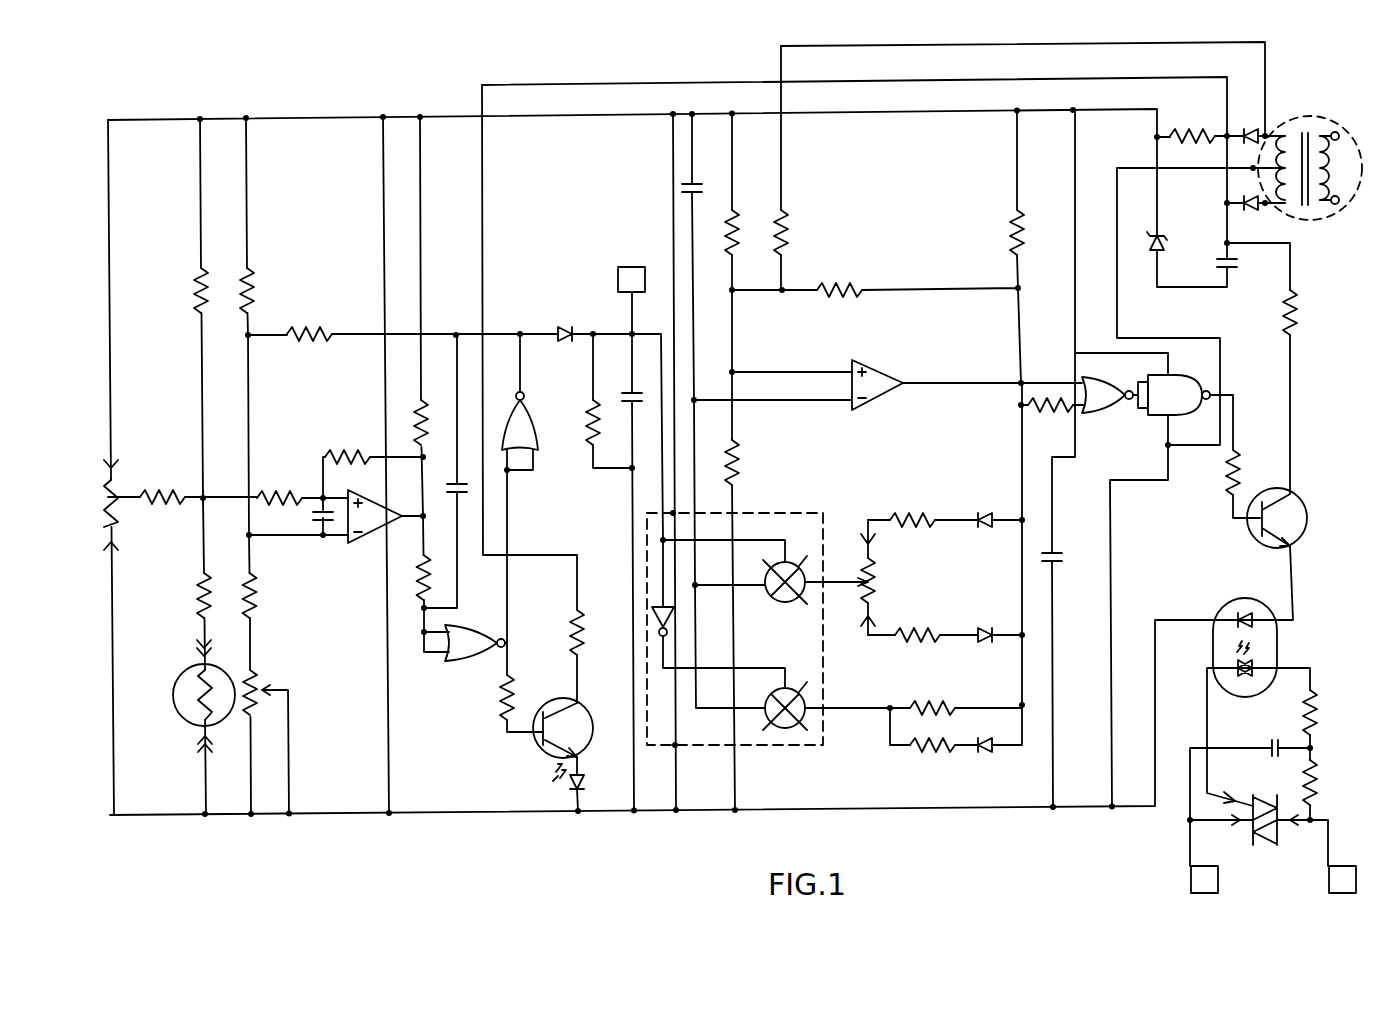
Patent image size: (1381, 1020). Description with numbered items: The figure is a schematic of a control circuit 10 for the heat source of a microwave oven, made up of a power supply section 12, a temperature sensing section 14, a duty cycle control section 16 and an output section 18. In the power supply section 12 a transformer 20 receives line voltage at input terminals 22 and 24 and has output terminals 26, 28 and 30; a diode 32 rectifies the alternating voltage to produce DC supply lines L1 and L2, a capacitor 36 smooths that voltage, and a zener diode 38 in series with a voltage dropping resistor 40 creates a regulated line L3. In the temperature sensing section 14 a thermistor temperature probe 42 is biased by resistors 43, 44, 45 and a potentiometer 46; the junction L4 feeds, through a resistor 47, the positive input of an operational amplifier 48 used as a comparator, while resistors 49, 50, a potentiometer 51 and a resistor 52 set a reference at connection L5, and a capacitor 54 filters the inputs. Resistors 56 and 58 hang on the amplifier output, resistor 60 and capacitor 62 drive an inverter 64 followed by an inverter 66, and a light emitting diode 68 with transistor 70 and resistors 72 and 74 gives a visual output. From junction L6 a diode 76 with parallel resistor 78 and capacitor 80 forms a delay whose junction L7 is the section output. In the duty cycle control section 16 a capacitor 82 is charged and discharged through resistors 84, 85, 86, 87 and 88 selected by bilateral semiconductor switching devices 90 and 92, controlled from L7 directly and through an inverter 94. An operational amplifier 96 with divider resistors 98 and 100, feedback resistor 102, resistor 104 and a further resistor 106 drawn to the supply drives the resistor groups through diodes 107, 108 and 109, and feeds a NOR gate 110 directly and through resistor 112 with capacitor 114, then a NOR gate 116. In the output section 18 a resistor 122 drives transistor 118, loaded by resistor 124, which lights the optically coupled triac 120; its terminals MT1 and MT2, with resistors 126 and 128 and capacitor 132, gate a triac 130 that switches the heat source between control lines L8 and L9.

The control circuit 10 is at (478, 861).
The power supply section 12 is at (1198, 212).
The temperature sensing section 14 is at (307, 407).
The duty cycle control section 16 is at (887, 464).
The output section 18 is at (1190, 560).
The transformer 20 is at (1310, 168).
The input terminal 22 is at (1337, 132).
The input terminal 24 is at (1337, 205).
The output terminal 26 is at (1268, 130).
The output terminal 28 is at (1254, 166).
The output terminal 30 is at (1268, 208).
The diode 32 is at (1254, 128).
The capacitor 36 is at (1216, 265).
The zener diode 38 is at (1168, 240).
The voltage dropping resistor 40 is at (1200, 144).
The thermistor temperature probe 42 is at (190, 688).
The resistor 43 is at (200, 592).
The resistor 44 is at (196, 291).
The resistor 45 is at (162, 488).
The potentiometer 46 is at (108, 497).
The resistor 47 is at (279, 488).
The operational amplifier 48 is at (365, 545).
The resistor 49 is at (250, 297).
The resistor 50 is at (256, 600).
The potentiometer 51 is at (258, 678).
The resistor 52 is at (305, 334).
The capacitor 54 is at (316, 514).
The resistor 56 is at (348, 456).
The resistor 58 is at (418, 413).
The resistor 60 is at (420, 573).
The capacitor 62 is at (452, 486).
The inverter 64 is at (476, 664).
The inverter 66 is at (527, 406).
The light emitting diode 68 is at (587, 781).
The transistor 70 is at (591, 720).
The resistor 72 is at (514, 692).
The resistor 74 is at (584, 634).
The diode 76 is at (560, 328).
The resistor 78 is at (588, 422).
The capacitor 80 is at (626, 394).
The capacitor 82 is at (682, 188).
The resistor 84 is at (908, 528).
The resistor 85 is at (917, 626).
The resistor 86 is at (942, 700).
The resistor 87 is at (940, 753).
The resistor 88 is at (873, 580).
The bilateral semiconductor switching device 90 is at (785, 602).
The bilateral semiconductor switching device 92 is at (786, 728).
The inverter 94 is at (690, 600).
The operational amplifier 96 is at (900, 366).
The resistor 98 is at (738, 228).
The resistor 100 is at (740, 452).
The resistor 102 is at (834, 286).
The resistor 104 is at (1010, 228).
The resistor 106 is at (788, 222).
The diode 107 is at (992, 512).
The diode 108 is at (968, 612).
The diode 109 is at (998, 752).
The NOR gate 110 is at (1112, 414).
The resistor 112 is at (1056, 416).
The capacitor 114 is at (1062, 557).
The NOR gate 116 is at (1205, 360).
The transistor 118 is at (1306, 500).
The optically coupled triac 120 is at (1212, 646).
The resistor 122 is at (1226, 472).
The resistor 124 is at (1283, 312).
The resistor 126 is at (1302, 702).
The resistor 128 is at (1302, 776).
The triac 130 is at (1278, 852).
The capacitor 132 is at (1276, 746).
The power supply line L1 is at (582, 80).
The power supply line L2 is at (1128, 170).
The regulated voltage line L3 is at (570, 118).
The junction L4 is at (216, 488).
The connection L5 is at (250, 538).
The junction L6 is at (518, 332).
The junction L7 is at (620, 266).
The control line L8 is at (1346, 896).
The control line L9 is at (1198, 896).
The first main terminal MT1 is at (1240, 832).
The second main terminal MT2 is at (1282, 830).